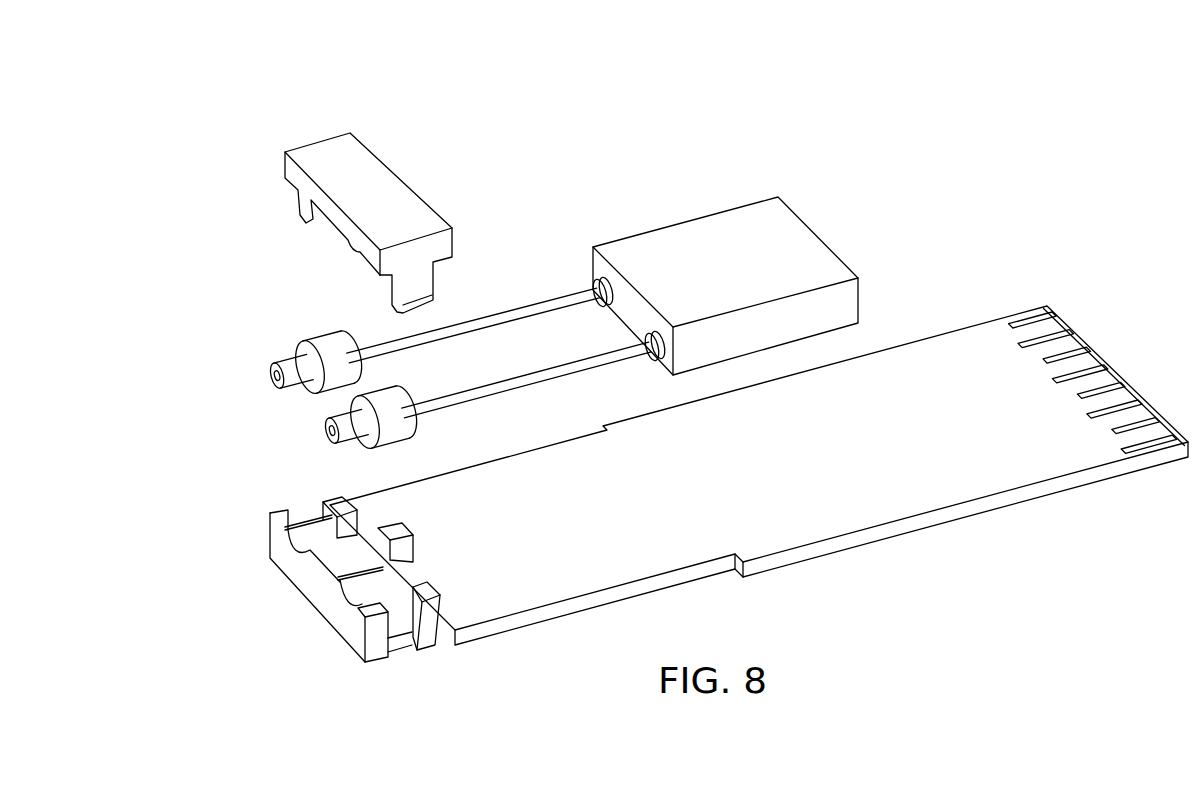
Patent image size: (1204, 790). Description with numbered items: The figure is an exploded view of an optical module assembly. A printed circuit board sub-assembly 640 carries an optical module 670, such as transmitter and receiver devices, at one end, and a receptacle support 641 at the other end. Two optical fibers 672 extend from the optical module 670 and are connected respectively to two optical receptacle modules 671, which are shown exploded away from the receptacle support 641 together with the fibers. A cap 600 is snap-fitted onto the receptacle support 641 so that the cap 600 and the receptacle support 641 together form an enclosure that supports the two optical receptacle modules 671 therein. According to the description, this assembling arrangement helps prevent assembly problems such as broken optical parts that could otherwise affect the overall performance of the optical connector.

The cap 600 is at (338, 170).
The optical module 670 is at (777, 248).
The optical fiber 672 is at (510, 308).
The optical receptacle module 671 is at (296, 350).
The printed circuit board (PCB) sub-assembly 640 is at (968, 398).
The receptacle support 641 is at (308, 578).